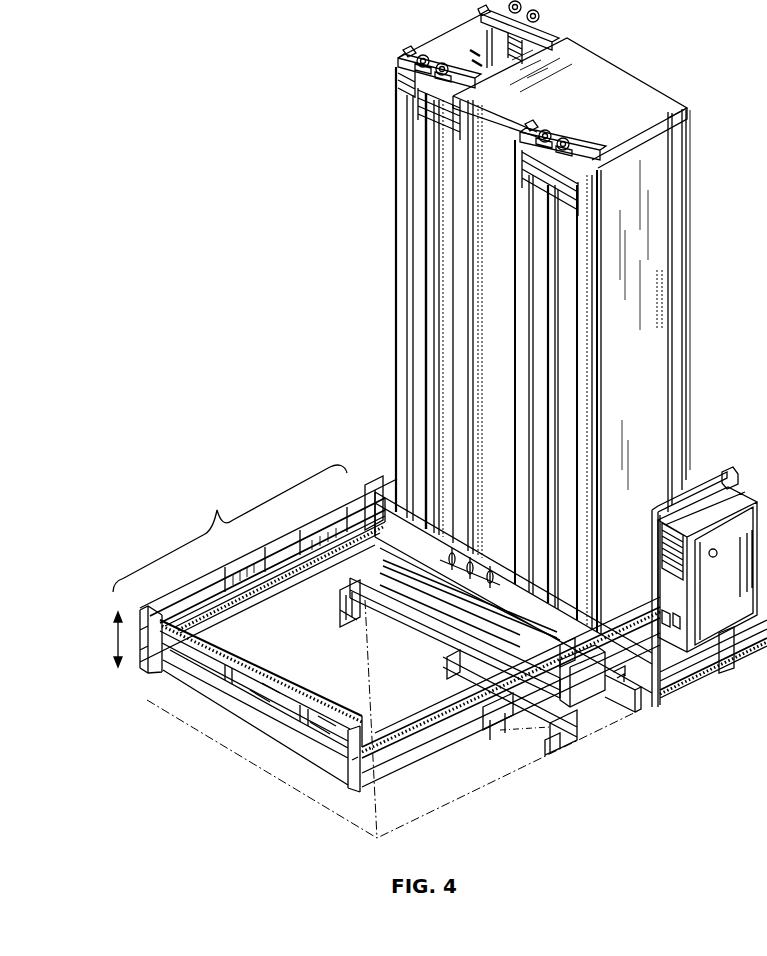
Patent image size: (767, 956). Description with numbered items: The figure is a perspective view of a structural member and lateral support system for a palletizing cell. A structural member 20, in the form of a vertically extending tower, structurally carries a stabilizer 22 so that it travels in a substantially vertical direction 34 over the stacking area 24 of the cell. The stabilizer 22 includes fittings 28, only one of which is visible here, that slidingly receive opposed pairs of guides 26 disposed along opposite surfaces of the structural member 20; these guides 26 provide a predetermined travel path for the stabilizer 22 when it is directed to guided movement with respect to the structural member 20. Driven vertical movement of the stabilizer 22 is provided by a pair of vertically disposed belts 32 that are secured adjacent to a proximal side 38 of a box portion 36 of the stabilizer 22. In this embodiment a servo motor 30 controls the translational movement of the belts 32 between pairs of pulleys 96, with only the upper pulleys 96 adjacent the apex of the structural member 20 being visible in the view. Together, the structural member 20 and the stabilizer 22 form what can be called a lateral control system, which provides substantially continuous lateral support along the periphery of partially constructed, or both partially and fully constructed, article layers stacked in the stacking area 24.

The structural member 20 is at (397, 184).
The stabilizer 22 is at (196, 586).
The stacking area 24 is at (498, 774).
The guides 26 is at (667, 223).
The fittings 28 is at (603, 588).
The servo motor 30 is at (635, 706).
The belts 32 is at (420, 242).
The vertical direction 34 is at (118, 640).
The box portion 36 is at (230, 528).
The proximal side 38 is at (428, 607).
The pulleys 96 is at (400, 108).